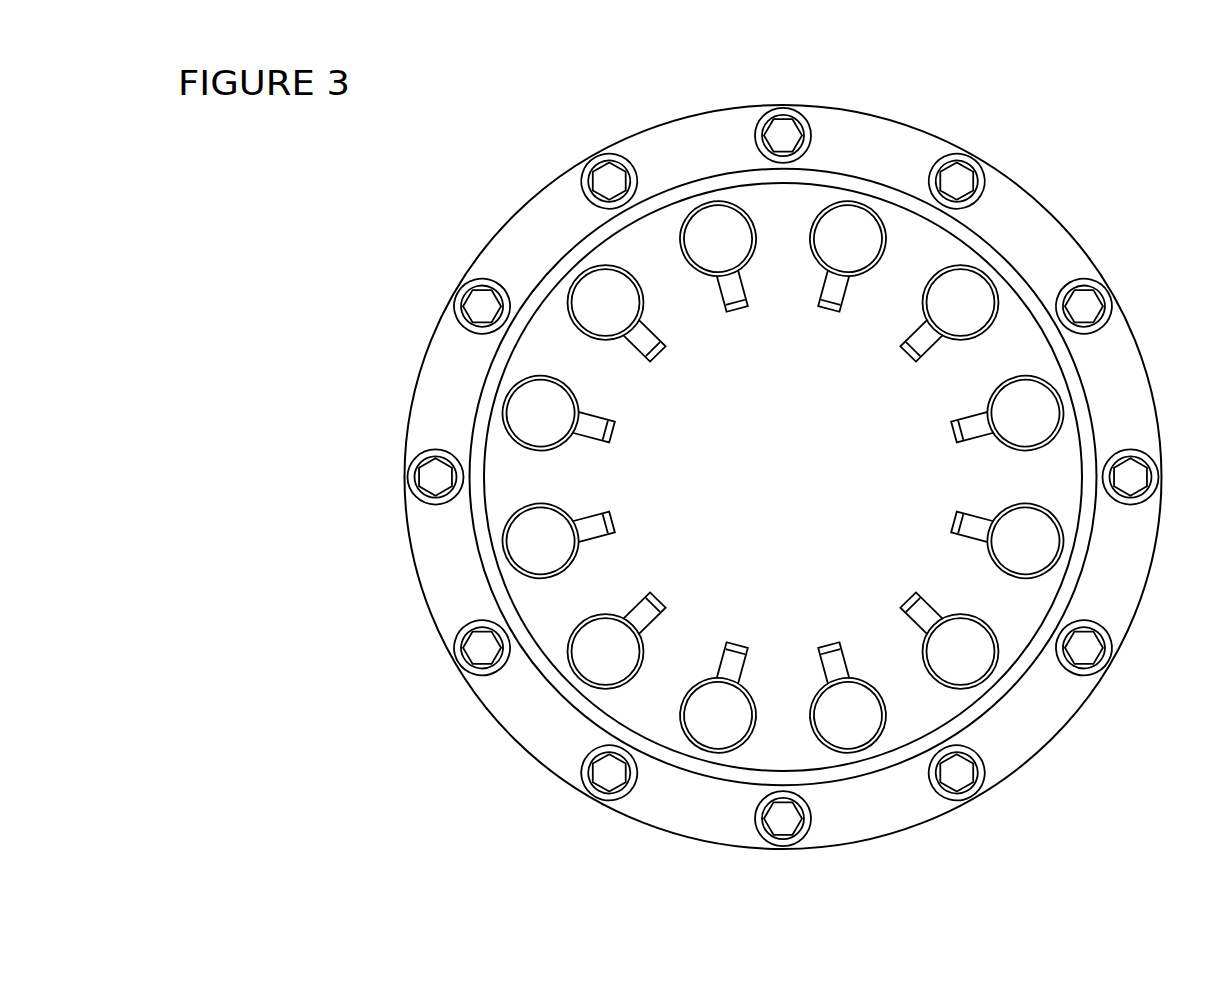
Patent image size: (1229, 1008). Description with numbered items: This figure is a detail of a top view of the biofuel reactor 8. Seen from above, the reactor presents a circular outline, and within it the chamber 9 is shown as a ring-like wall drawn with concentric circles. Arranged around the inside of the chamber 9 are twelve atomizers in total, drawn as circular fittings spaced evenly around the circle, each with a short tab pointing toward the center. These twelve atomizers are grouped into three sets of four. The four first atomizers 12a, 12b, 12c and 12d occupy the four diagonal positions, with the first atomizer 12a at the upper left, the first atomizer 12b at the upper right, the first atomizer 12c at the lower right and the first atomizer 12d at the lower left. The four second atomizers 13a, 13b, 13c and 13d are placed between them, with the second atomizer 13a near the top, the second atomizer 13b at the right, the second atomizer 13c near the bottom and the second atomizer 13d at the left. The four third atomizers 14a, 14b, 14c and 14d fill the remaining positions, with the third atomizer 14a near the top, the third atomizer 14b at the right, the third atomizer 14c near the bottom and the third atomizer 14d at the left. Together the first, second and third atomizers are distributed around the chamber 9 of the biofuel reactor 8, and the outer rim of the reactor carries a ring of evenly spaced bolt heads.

The biofuel reactor 8 is at (719, 477).
The chamber 9 is at (822, 477).
The first atomizer 12a is at (566, 283).
The first atomizer 12b is at (1001, 281).
The first atomizer 12c is at (1000, 673).
The first atomizer 12d is at (566, 677).
The second atomizer 13a is at (703, 199).
The second atomizer 13b is at (1085, 415).
The second atomizer 13c is at (863, 757).
The second atomizer 13d is at (480, 544).
The third atomizer 14a is at (864, 199).
The third atomizer 14b is at (1085, 540).
The third atomizer 14c is at (703, 758).
The third atomizer 14d is at (480, 417).